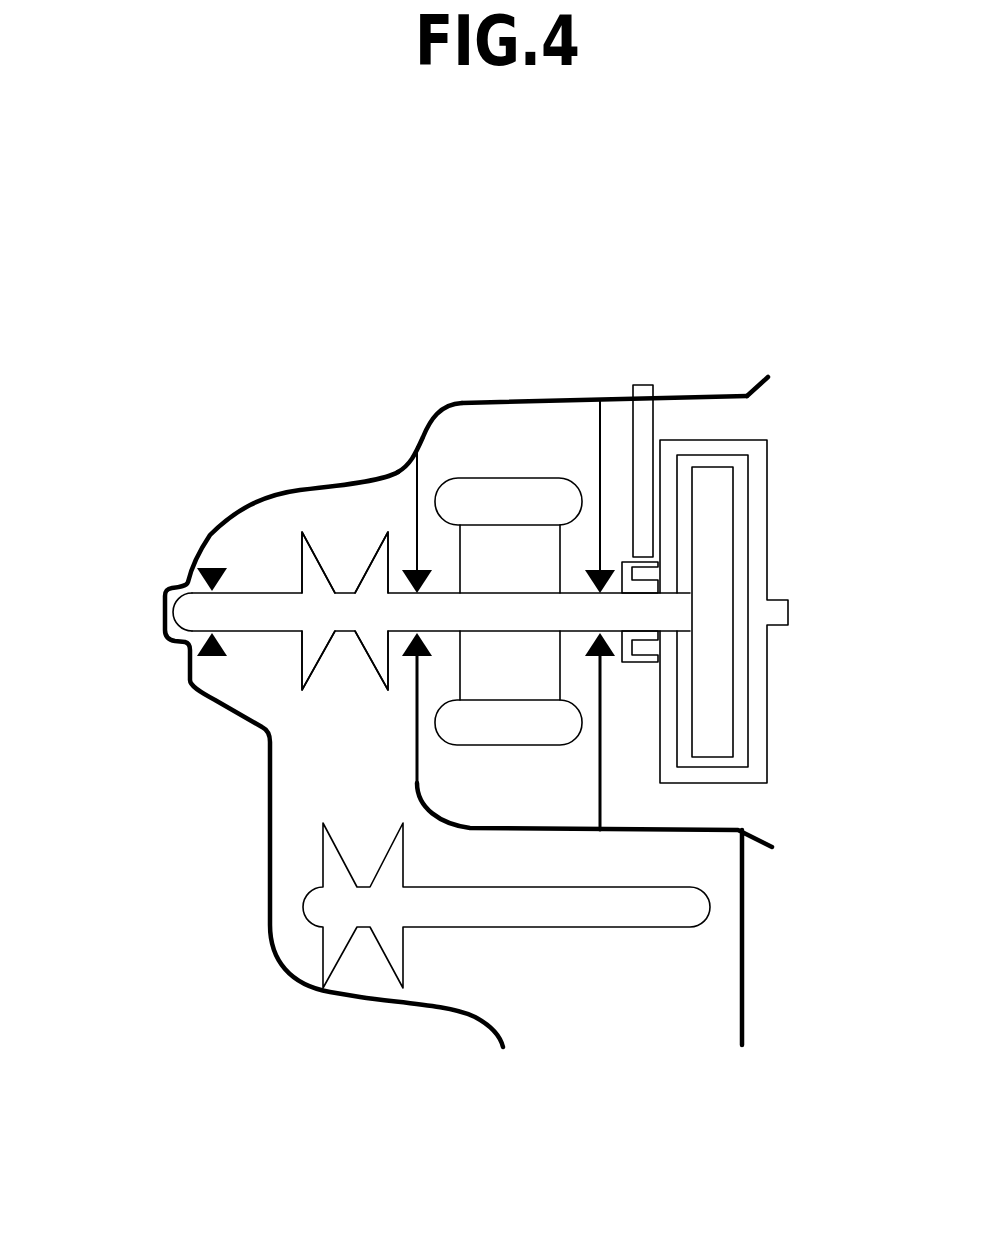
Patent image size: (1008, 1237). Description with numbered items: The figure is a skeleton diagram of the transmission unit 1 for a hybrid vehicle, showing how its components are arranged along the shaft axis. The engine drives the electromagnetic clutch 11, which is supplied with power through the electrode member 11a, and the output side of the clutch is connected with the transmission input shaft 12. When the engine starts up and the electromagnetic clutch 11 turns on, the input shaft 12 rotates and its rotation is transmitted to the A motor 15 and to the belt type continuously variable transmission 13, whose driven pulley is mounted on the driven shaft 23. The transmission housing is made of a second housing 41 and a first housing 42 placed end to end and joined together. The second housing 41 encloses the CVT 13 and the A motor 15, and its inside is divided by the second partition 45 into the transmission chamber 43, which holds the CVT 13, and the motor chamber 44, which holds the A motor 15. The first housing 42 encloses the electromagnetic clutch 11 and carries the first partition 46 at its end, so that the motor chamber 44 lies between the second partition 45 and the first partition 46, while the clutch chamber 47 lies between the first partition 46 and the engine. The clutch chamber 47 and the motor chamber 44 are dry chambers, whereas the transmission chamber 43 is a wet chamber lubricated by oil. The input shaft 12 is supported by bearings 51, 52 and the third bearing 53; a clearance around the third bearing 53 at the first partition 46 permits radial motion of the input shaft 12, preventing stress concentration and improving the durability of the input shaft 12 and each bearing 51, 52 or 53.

The transmission unit 1 is at (468, 390).
The electromagnetic clutch 11 is at (776, 666).
The electrode member 11a is at (640, 560).
The transmission input shaft 12 is at (658, 618).
The belt type continuously variable transmission 13 is at (322, 770).
The A motor 15 is at (580, 694).
The driven shaft 23 is at (602, 912).
The second housing 41 is at (515, 400).
The first housing 42 is at (728, 393).
The transmission chamber 43 is at (257, 697).
The motor chamber 44 is at (453, 430).
The second partition 45 is at (413, 505).
The first partition 46 is at (598, 763).
The clutch chamber 47 is at (685, 808).
The bearing 51 is at (210, 567).
The bearing 52 is at (410, 567).
The third bearing 53 is at (578, 648).